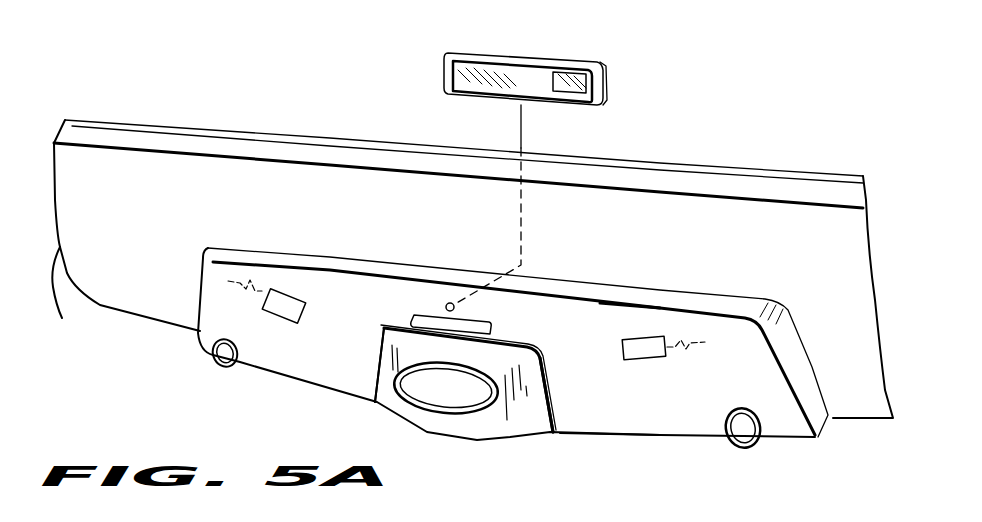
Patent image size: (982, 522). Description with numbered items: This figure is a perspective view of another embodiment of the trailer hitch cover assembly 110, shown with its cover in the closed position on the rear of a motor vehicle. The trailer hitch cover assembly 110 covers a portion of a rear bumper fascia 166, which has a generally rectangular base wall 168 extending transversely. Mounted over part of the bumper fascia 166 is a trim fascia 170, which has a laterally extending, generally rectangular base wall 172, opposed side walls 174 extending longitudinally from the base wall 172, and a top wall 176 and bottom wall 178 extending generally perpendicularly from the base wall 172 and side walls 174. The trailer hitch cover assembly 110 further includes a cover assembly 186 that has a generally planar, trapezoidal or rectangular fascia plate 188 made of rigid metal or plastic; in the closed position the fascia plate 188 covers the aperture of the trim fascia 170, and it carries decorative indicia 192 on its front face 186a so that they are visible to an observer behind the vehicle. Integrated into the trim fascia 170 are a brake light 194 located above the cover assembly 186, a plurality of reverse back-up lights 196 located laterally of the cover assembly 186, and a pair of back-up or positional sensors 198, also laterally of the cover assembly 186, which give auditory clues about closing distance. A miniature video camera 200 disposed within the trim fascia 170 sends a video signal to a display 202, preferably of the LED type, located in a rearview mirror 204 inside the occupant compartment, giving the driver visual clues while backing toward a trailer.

The trailer hitch cover assembly 110 is at (279, 212).
The bumper fascia 166 is at (472, 269).
The base wall 168 is at (200, 205).
The trim fascia 170 is at (200, 283).
The base wall 172 is at (628, 412).
The side walls 174 is at (793, 372).
The top wall 176 is at (633, 303).
The bottom wall 178 is at (597, 437).
The cover assembly 186 is at (366, 362).
The housing side edge 186a is at (385, 396).
The fascia plate 188 is at (521, 418).
The indicia 192 is at (442, 412).
The brake light 194 is at (425, 317).
The reverse back-up lights 196 is at (283, 307).
The back-up or positional sensors 198 is at (214, 357).
The miniature video camera 200 is at (448, 303).
The display 202 is at (557, 83).
The rearview mirror 204 is at (447, 79).